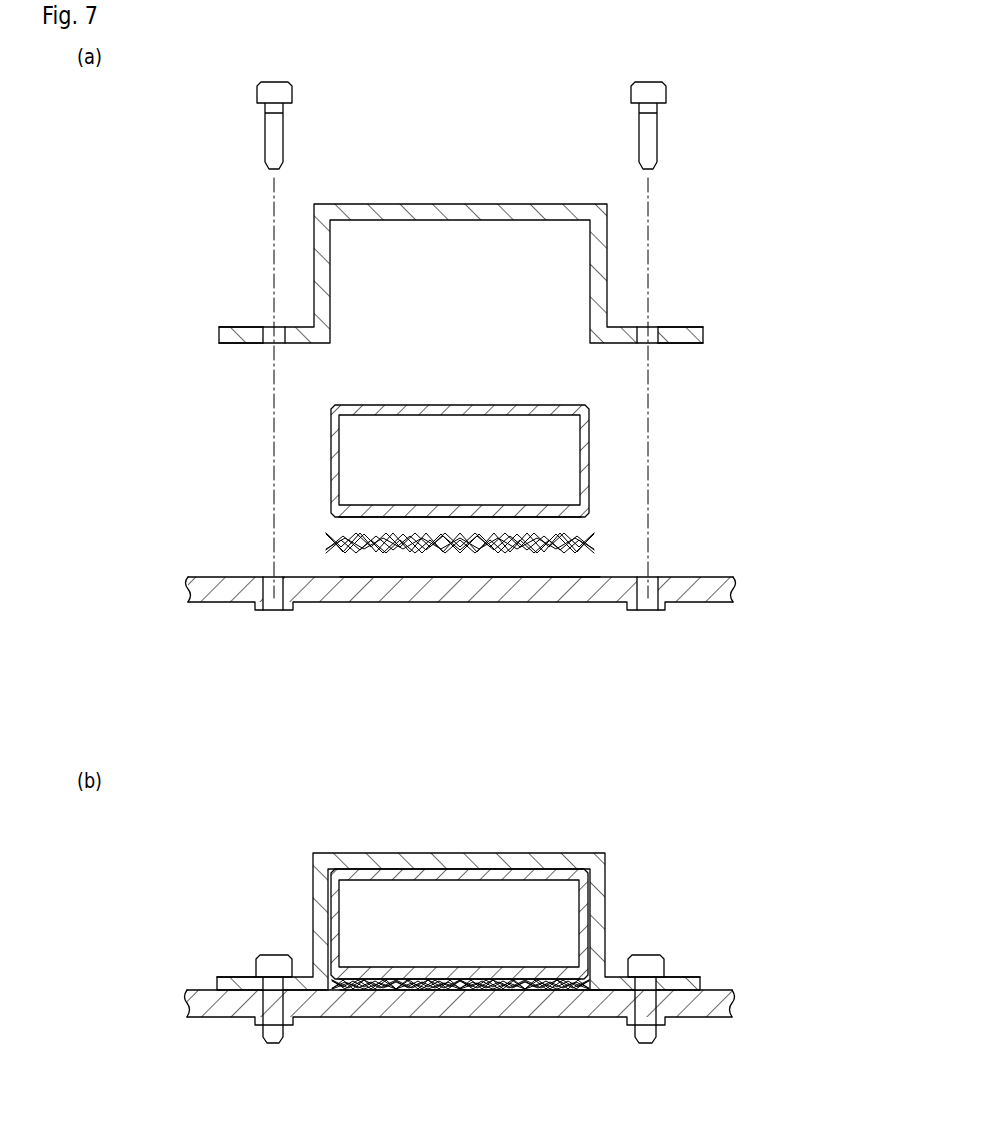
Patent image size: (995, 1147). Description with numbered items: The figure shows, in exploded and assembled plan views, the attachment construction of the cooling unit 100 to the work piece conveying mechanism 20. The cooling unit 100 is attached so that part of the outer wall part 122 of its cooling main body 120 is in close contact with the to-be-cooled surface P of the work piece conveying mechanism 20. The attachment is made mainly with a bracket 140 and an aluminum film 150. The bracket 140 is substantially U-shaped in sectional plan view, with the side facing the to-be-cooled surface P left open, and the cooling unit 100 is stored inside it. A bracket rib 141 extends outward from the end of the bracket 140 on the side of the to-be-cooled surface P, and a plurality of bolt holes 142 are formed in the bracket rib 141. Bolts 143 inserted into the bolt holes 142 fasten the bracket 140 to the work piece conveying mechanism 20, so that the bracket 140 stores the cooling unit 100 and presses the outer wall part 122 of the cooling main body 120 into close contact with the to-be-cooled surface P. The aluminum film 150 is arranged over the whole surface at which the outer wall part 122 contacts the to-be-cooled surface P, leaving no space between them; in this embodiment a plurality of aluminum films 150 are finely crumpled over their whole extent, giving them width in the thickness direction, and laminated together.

The work piece conveying mechanism 20 is at (433, 653).
The cooling unit 100 is at (433, 644).
The cooling main body 120 is at (459, 691).
The outer wall part 122 is at (352, 517).
The bracket 140 is at (468, 168).
The bracket rib 141 is at (236, 326).
The bolt holes 142 is at (278, 343).
The bolts 143 is at (285, 90).
The aluminum film 150 is at (636, 558).
The to-be-cooled surface P is at (349, 577).